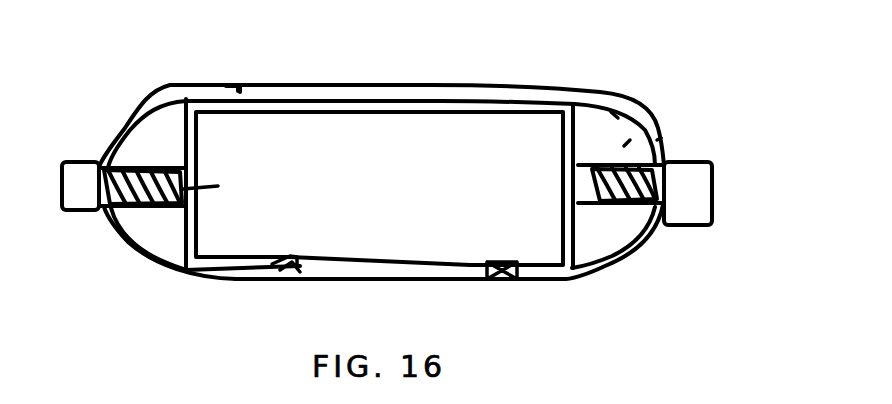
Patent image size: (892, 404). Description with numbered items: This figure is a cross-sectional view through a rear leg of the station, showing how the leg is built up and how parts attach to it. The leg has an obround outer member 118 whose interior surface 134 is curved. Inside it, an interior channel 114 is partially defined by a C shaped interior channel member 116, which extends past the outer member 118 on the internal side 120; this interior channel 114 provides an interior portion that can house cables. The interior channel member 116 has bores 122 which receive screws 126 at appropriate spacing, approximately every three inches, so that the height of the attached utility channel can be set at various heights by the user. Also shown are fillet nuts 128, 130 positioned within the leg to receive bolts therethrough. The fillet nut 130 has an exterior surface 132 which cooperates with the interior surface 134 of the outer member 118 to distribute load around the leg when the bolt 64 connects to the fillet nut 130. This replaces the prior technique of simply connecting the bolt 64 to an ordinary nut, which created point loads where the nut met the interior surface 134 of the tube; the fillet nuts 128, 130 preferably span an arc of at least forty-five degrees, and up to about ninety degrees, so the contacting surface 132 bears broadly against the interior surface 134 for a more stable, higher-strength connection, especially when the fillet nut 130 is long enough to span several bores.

The bolt 64 is at (700, 201).
The interior channel 114 is at (437, 143).
The C shaped interior channel member 116 is at (195, 148).
The outer member 118 is at (238, 86).
The internal side 120 is at (221, 309).
The bores 122 is at (508, 264).
The screws 126 is at (500, 299).
The fillet nut 128 is at (157, 237).
The fillet nut 130 is at (626, 141).
The exterior surface 132 is at (657, 140).
The interior surface 134 is at (621, 109).